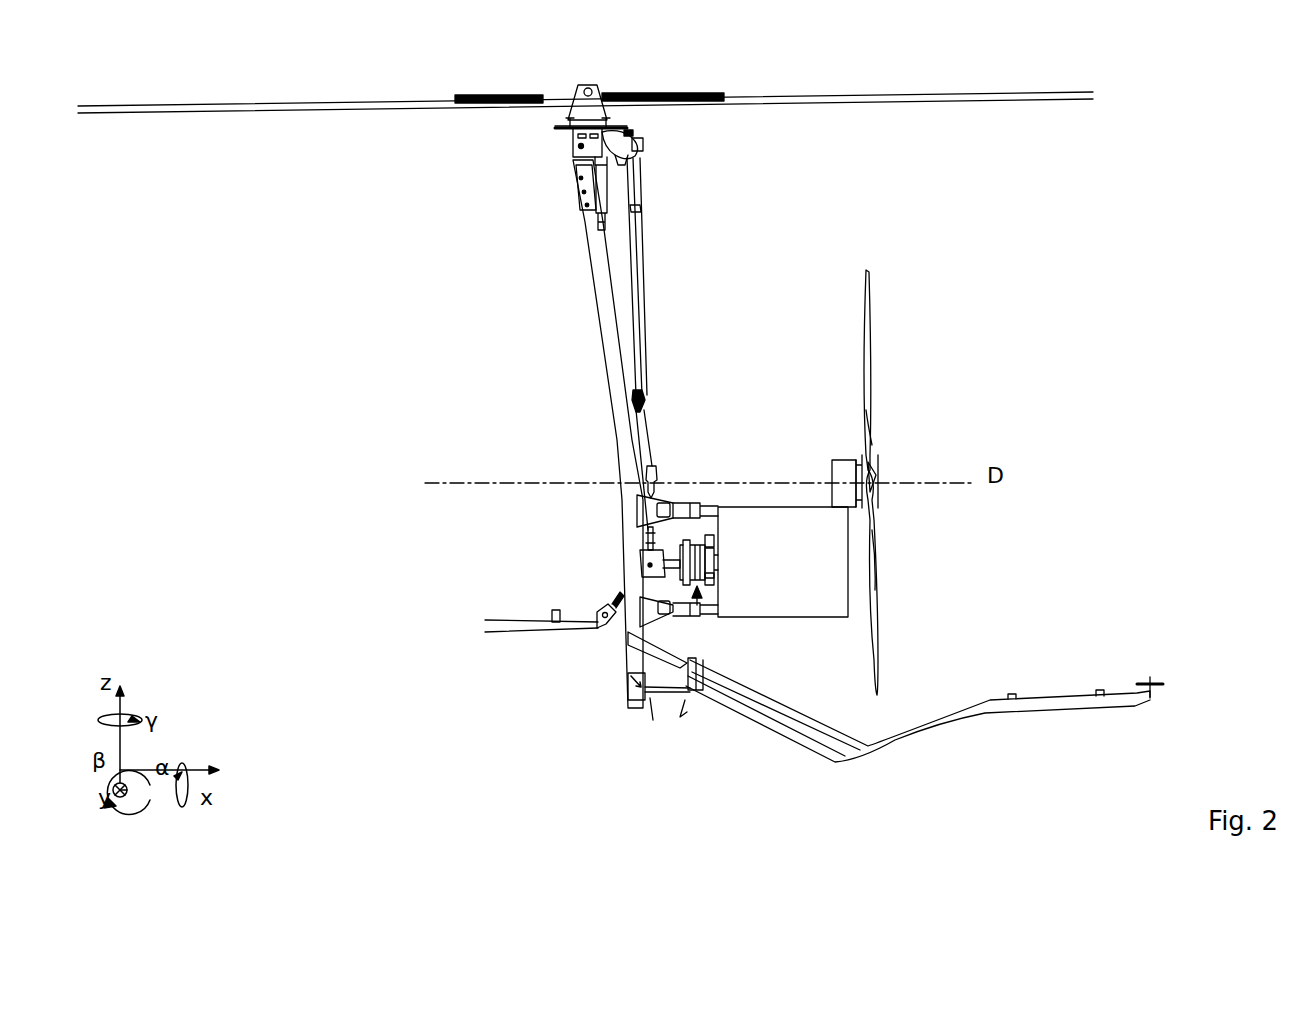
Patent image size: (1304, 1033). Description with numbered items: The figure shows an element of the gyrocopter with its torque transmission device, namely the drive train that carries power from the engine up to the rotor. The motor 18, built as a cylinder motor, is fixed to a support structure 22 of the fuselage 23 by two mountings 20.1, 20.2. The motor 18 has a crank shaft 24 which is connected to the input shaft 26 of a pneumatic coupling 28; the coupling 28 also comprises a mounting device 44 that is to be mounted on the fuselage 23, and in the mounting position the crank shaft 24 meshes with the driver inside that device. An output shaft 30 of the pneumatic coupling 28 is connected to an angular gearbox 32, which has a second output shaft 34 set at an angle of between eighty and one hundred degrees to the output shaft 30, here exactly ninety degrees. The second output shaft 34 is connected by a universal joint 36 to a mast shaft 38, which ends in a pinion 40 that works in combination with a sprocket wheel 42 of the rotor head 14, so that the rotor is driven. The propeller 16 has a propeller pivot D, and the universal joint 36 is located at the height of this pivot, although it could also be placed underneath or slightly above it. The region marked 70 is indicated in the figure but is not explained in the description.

The suspension device 14 is at (700, 142).
The propeller 16 is at (878, 482).
The propulsion unit / motor 18 is at (798, 536).
The upper strut 20.1 is at (660, 498).
The lower strut 20.2 is at (647, 610).
The support arm 22 is at (598, 266).
The pivot direction 23 is at (586, 366).
The flange 24 is at (716, 562).
The coupling element 26 is at (712, 546).
The thrust direction 28 is at (698, 606).
The linkage 30 is at (678, 560).
The bearing block 32 is at (638, 560).
The pin 34 is at (650, 542).
The rod end 36 is at (654, 478).
The control rod 38 is at (648, 355).
The guide hook 40 is at (643, 147).
The mounting plate 42 is at (555, 129).
The drive coupling 44 is at (700, 540).
The wind tunnel test section 70 is at (788, 250).